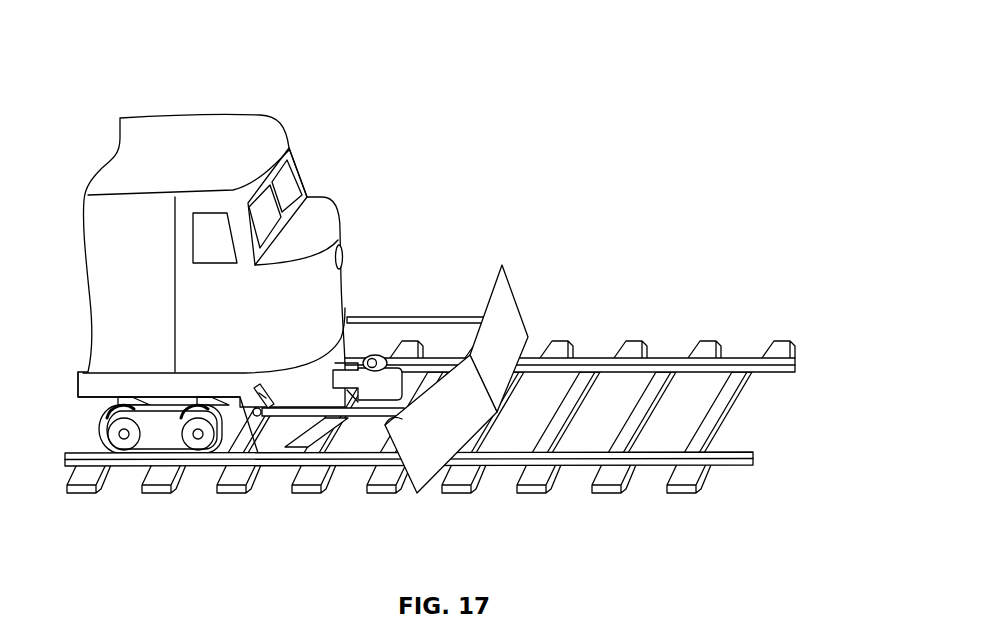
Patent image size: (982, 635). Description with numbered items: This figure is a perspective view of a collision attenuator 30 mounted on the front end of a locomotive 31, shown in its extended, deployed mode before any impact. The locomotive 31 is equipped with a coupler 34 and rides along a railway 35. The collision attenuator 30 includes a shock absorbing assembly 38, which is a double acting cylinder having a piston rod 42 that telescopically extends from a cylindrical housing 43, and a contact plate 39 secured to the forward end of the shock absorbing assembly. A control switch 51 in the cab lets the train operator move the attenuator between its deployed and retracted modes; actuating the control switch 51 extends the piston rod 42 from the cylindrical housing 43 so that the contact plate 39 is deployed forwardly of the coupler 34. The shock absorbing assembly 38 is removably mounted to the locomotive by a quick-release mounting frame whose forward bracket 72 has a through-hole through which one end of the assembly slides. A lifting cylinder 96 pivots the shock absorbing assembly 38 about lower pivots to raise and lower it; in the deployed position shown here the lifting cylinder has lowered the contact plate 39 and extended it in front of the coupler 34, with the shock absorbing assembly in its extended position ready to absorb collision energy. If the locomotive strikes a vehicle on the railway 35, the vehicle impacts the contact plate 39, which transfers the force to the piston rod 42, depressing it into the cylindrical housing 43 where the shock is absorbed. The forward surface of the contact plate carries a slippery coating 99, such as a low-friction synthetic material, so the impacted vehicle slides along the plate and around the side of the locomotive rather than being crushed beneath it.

The collision attenuator 30 is at (527, 318).
The locomotive 31 is at (265, 112).
The coupler 34 is at (363, 353).
The railway 35 is at (667, 352).
The shock absorbing assembly 38 is at (385, 311).
The contact plate 39 is at (519, 302).
The piston rod 42 is at (428, 315).
The cylindrical housing 43 is at (302, 408).
The control switch 51 is at (268, 216).
The forward bracket 72 is at (260, 424).
The lifting cylinder 96 is at (259, 381).
The slippery coating 99 is at (447, 425).